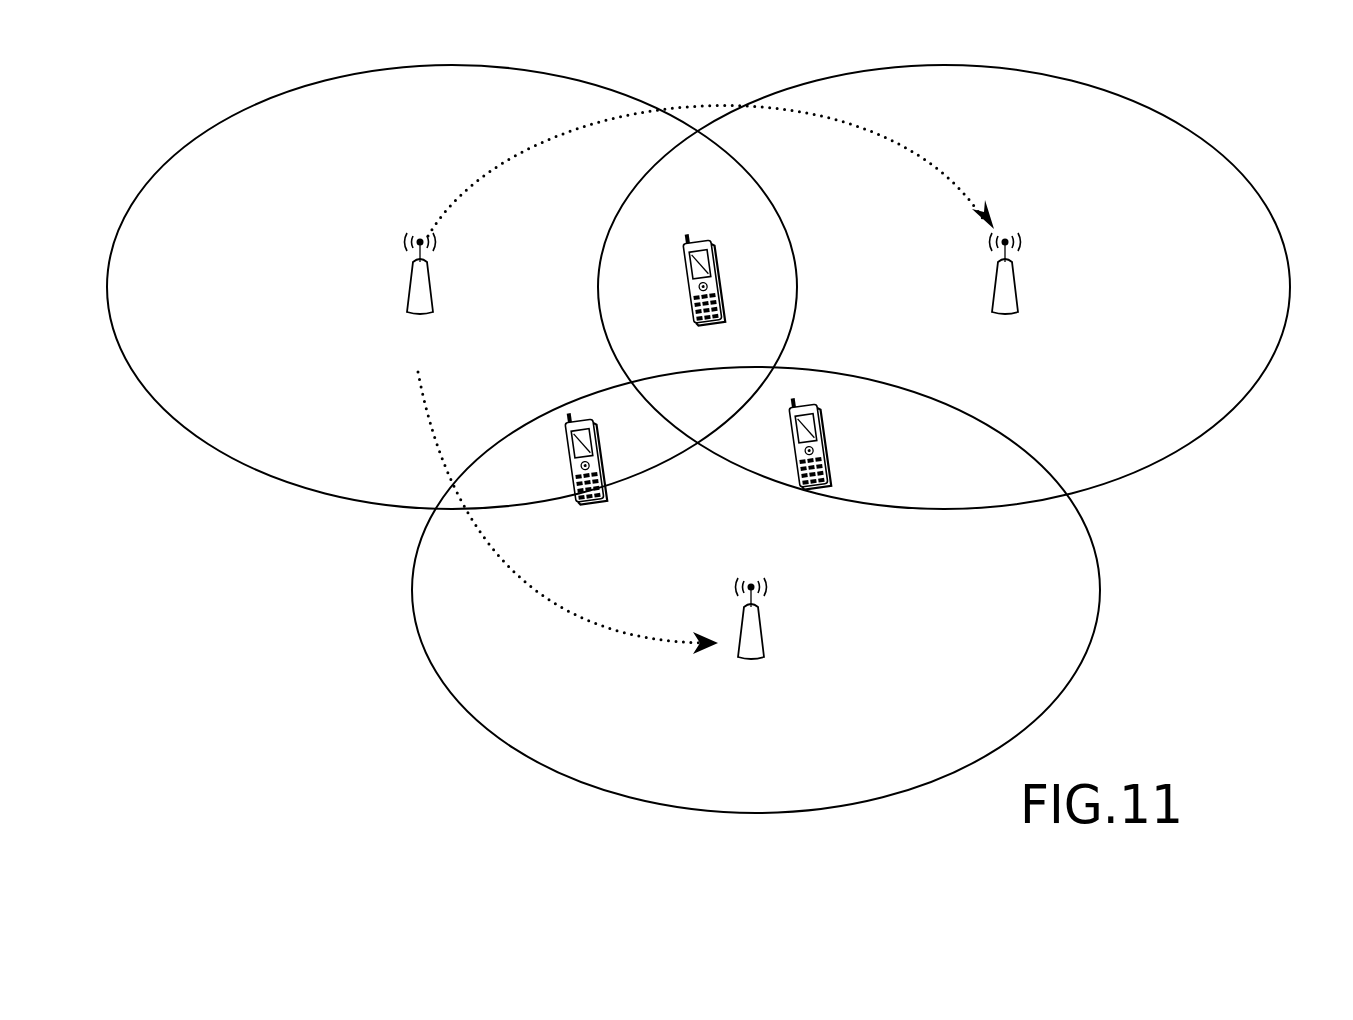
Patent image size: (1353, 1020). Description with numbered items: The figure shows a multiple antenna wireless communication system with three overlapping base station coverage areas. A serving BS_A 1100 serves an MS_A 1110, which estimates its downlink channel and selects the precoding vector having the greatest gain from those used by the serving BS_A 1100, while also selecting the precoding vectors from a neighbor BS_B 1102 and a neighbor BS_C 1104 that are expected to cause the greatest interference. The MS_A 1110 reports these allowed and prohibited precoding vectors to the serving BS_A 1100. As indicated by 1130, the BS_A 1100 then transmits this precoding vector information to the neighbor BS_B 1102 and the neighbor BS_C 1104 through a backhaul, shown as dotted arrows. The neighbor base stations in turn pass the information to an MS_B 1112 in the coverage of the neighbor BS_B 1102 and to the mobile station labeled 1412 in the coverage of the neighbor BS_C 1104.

The serving BS_A 1100 is at (432, 292).
The neighbor BS_B 1102 is at (1017, 294).
The neighbor BS_C 1104 is at (763, 640).
The MS_A 1110 is at (718, 283).
The MS_B 1112 is at (822, 448).
The mobile station C 1412 is at (597, 452).
The transmission of precoding vector information 1130 is at (791, 76).